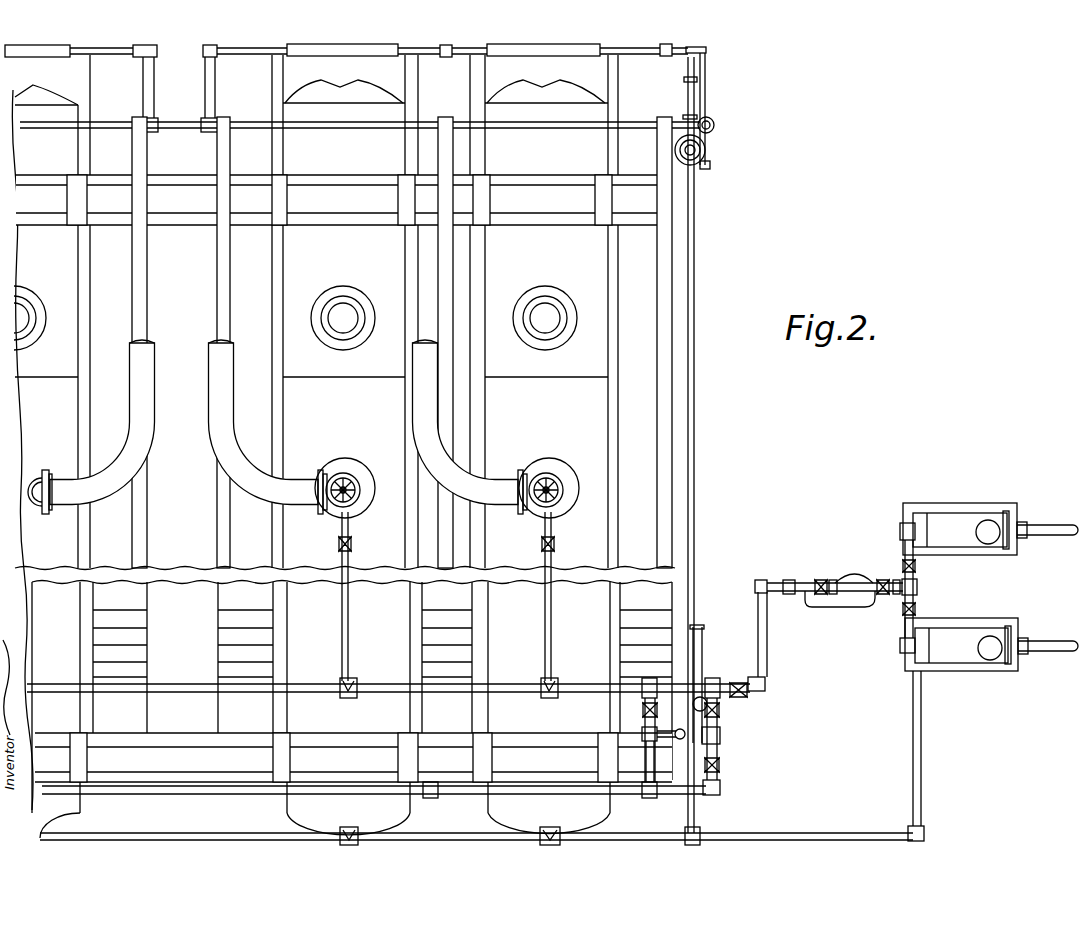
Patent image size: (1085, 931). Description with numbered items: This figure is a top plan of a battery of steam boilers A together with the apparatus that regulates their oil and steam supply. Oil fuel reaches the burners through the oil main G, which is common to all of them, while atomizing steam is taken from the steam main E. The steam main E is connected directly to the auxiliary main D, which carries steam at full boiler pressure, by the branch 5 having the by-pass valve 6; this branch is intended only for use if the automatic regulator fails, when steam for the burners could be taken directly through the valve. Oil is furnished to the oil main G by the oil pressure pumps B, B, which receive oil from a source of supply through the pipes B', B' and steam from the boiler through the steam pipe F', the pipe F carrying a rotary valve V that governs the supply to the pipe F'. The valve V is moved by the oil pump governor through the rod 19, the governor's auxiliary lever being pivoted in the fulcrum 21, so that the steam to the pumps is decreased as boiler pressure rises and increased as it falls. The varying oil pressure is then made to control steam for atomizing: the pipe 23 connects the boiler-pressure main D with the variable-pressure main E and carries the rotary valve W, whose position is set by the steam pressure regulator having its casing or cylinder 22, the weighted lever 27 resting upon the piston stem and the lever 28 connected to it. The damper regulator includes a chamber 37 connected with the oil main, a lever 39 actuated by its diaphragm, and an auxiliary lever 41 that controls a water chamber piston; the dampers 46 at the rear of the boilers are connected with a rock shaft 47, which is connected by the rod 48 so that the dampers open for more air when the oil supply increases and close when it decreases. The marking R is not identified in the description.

The dampers 46 is at (541, 51).
The rock shaft 47 is at (195, 128).
The auxiliary lever 41 is at (707, 76).
The lever 39 is at (697, 98).
The chamber 37 is at (702, 148).
The rod 48 is at (712, 165).
The steam boilers A is at (210, 513).
The auxiliary main D is at (388, 681).
The steam main E is at (374, 782).
The oil main G is at (447, 840).
The pipe F is at (765, 635).
The steam pipe F' is at (835, 599).
The rotary valve V is at (853, 583).
The rod 19 is at (872, 584).
The weighted lever 27 is at (704, 653).
The lever 28 is at (704, 667).
The by-pass valve 6 is at (656, 708).
The pipe R is at (656, 738).
The casing or cylinder 22 is at (686, 726).
The pipe 23 is at (721, 722).
The rotary valve W is at (722, 737).
The fulcrum 21 is at (708, 765).
The branch 5 is at (658, 758).
The oil pressure pumps B is at (960, 577).
The pipes B' is at (1047, 582).